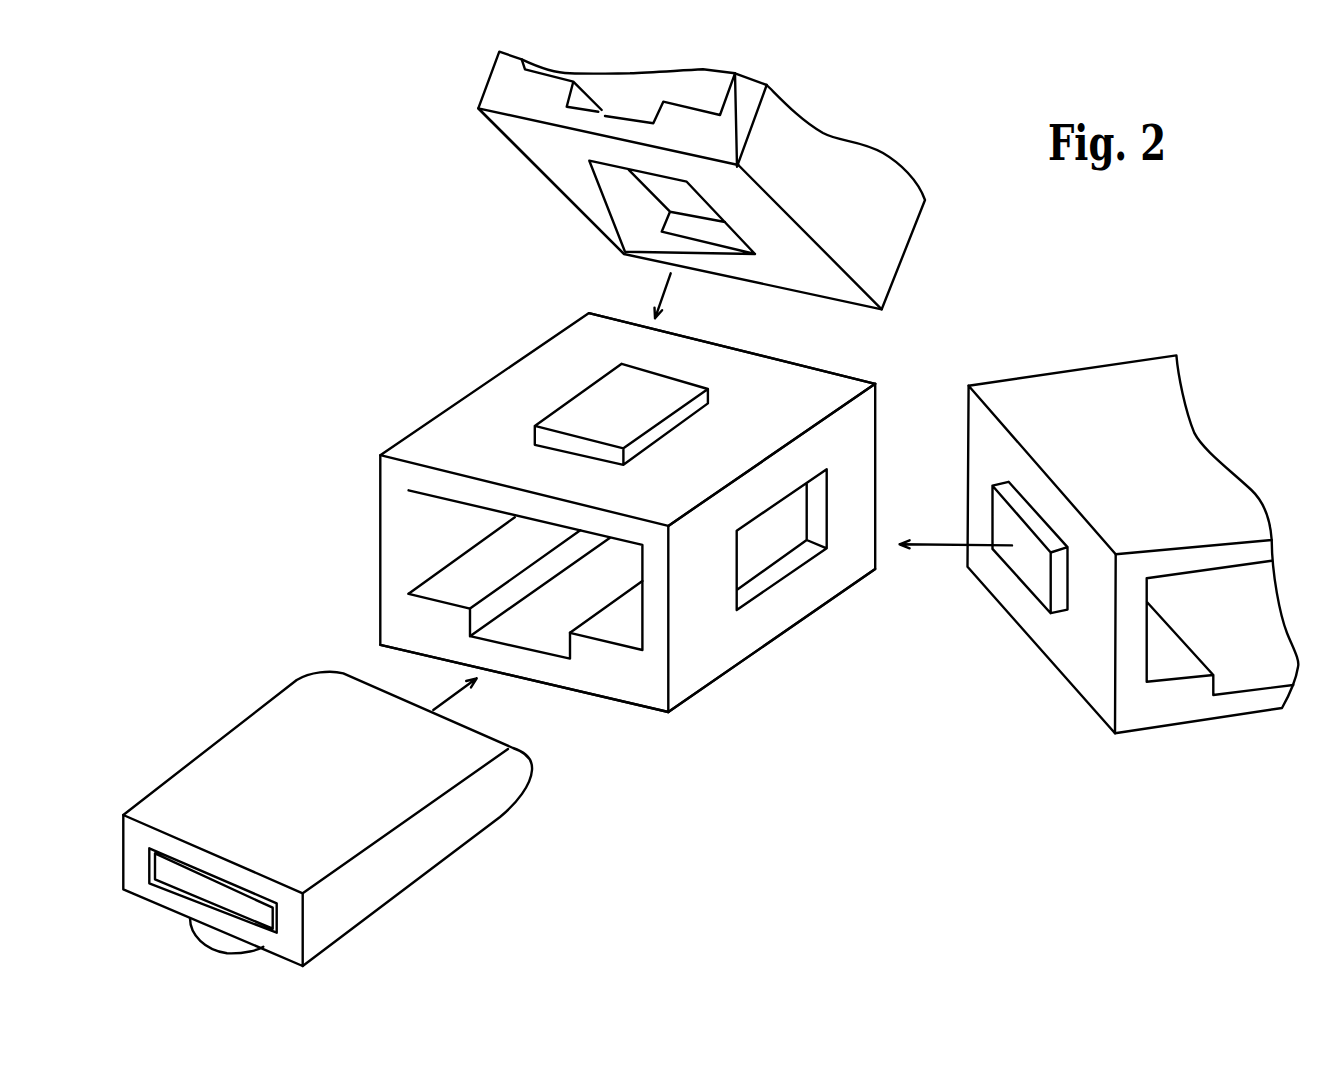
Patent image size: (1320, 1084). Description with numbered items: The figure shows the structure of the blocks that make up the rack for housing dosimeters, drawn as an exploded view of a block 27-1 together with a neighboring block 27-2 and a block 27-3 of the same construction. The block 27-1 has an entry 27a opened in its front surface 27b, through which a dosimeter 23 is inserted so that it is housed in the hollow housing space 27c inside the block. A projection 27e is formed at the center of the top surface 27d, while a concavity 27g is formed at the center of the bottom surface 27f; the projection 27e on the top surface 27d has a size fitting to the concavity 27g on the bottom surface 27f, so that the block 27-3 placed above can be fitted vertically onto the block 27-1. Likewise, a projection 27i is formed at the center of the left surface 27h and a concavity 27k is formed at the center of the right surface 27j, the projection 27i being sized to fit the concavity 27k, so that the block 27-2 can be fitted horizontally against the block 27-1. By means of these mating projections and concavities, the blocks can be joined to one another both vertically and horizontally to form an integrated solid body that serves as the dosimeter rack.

The dosimeter 23 is at (228, 732).
The block 27-1 is at (448, 407).
The block 27-2 is at (1109, 385).
The block 27-3 is at (882, 233).
The entry 27a is at (409, 550).
The front surface 27b is at (633, 678).
The hollow housing space 27c is at (556, 616).
The top surface 27d is at (789, 393).
The projection 27e is at (600, 403).
The bottom surface 27f is at (533, 143).
The concavity 27g is at (668, 191).
The left surface 27h is at (1092, 665).
The projection 27i is at (1035, 579).
The right surface 27j is at (698, 663).
The concavity 27k is at (765, 546).